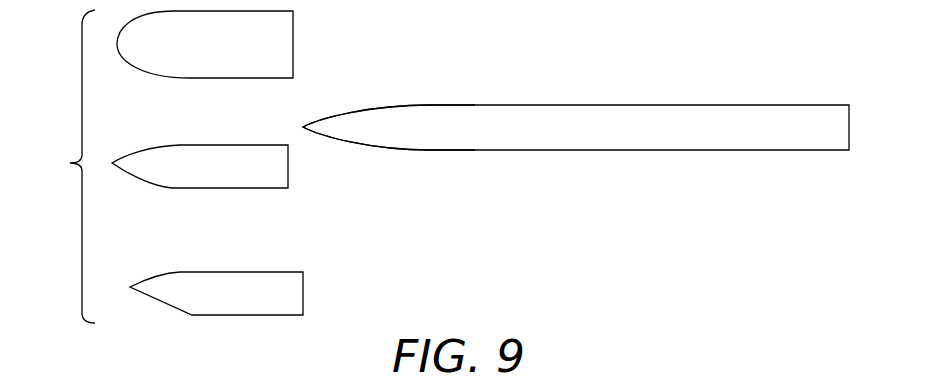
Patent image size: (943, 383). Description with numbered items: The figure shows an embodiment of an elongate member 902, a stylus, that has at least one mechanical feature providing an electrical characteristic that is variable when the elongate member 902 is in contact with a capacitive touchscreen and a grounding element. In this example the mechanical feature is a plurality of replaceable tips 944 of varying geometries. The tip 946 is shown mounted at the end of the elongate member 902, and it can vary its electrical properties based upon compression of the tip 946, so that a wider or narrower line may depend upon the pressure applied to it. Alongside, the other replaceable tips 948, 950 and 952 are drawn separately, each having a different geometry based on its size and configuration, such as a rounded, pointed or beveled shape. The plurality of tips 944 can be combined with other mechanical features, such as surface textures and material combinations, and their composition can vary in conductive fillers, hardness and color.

The elongate member 902 is at (576, 126).
The plurality of replaceable tips 944 is at (60, 166).
The tip 946 is at (387, 147).
The tip 948 is at (293, 42).
The tip 950 is at (288, 164).
The tip 952 is at (303, 291).